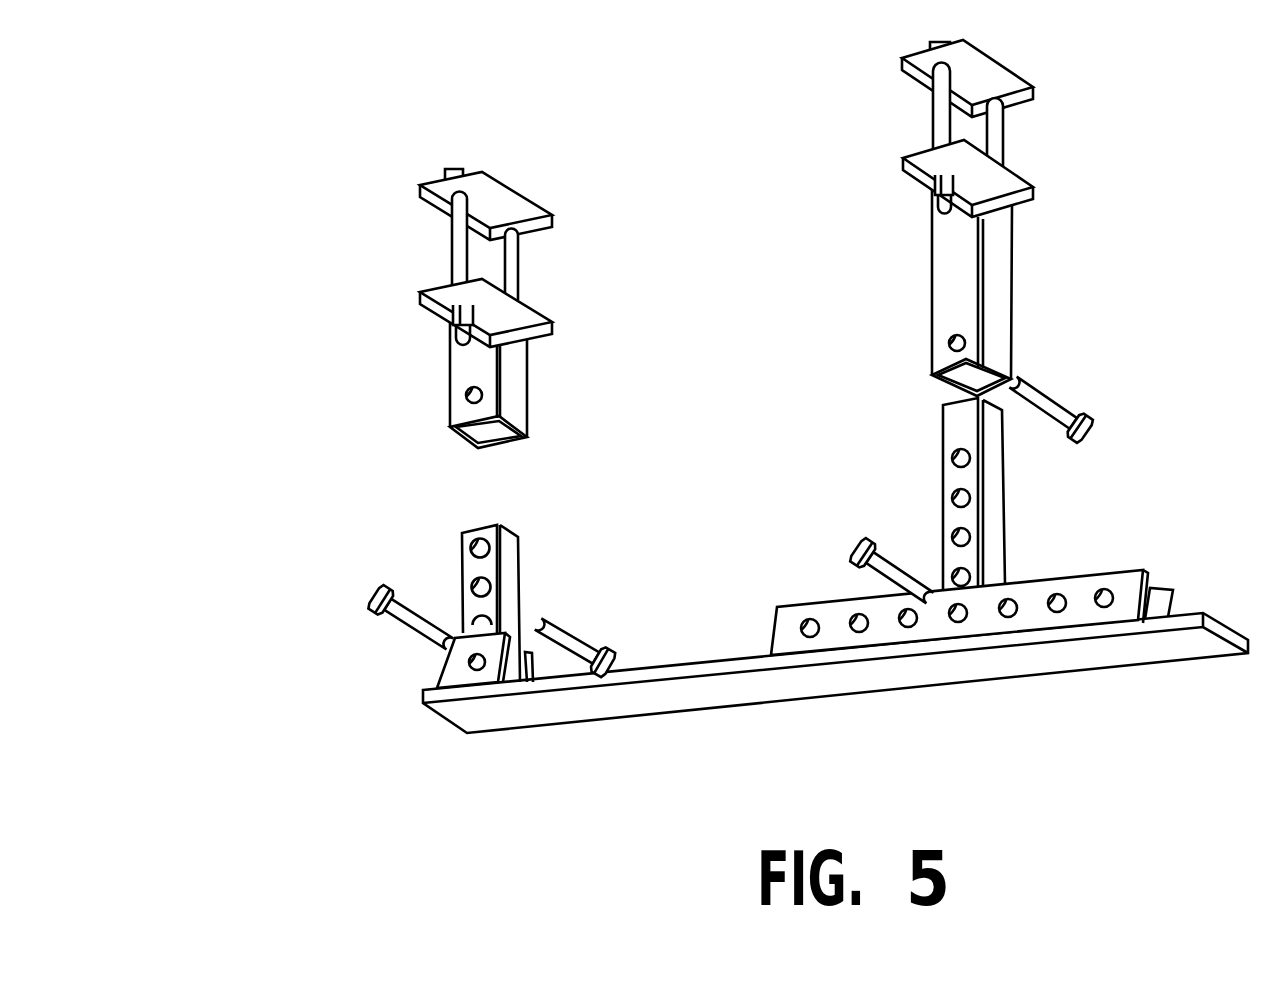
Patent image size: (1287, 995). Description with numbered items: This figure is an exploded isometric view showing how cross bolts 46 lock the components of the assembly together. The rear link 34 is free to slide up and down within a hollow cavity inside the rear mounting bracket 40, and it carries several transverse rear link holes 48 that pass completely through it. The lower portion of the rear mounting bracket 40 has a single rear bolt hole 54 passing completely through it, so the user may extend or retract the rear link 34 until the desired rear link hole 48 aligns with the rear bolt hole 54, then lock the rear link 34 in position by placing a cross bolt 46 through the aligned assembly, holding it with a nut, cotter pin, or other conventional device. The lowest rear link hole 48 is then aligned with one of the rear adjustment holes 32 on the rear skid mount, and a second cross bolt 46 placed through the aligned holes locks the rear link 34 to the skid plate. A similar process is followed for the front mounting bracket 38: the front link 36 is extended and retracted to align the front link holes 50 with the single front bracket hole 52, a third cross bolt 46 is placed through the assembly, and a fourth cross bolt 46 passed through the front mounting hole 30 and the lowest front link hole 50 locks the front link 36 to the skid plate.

The front mounting hole 30 is at (465, 670).
The rear adjustment holes 32 is at (963, 621).
The rear link 34 is at (1007, 517).
The front link 36 is at (522, 555).
The front mounting bracket 38 is at (450, 372).
The rear mounting bracket 40 is at (1013, 277).
The cross bolts 46 is at (1093, 417).
The rear link holes 48 is at (955, 532).
The front link holes 50 is at (473, 620).
The front bracket hole 52 is at (463, 400).
The rear bolt hole 54 is at (949, 342).